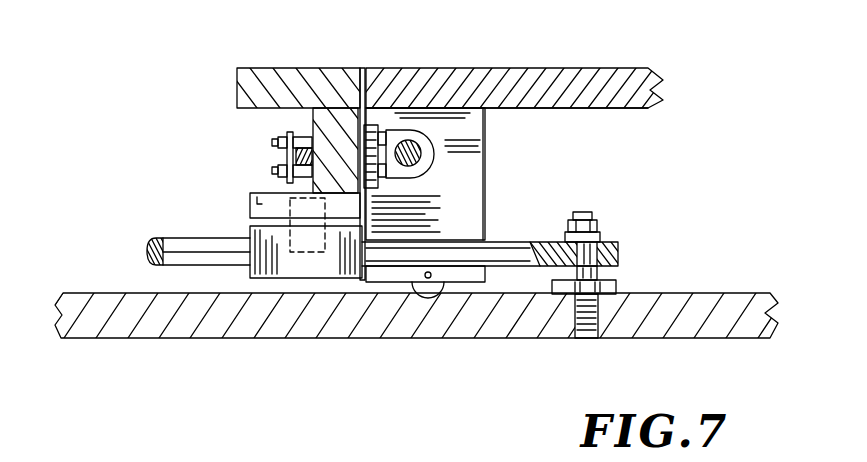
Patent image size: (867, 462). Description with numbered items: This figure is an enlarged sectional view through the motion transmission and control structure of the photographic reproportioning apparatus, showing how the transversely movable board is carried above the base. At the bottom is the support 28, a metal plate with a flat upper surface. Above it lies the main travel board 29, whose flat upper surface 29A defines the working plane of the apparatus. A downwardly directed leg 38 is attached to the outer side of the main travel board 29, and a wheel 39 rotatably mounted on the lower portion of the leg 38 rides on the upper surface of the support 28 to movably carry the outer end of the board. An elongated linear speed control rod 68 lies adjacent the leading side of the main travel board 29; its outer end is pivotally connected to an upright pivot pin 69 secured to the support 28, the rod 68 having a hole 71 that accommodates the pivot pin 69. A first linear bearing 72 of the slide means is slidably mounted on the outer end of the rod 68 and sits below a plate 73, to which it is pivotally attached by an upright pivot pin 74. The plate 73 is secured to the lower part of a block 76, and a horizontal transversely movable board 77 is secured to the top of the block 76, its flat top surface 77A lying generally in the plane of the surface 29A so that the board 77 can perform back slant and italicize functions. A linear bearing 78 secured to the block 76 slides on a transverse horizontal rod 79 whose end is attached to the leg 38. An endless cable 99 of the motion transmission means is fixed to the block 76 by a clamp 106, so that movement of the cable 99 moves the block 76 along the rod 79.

The support 28 is at (735, 297).
The main travel board 29 is at (625, 80).
The upper surface of main travel board 29A is at (549, 68).
The leg 38 is at (487, 176).
The wheel 39 is at (430, 282).
The speed control rod 68 is at (150, 243).
The pivot pin 69 is at (620, 255).
The hole 71 is at (599, 240).
The first linear bearing 72 is at (265, 277).
The plate 73 is at (258, 209).
The pivot pin 74 is at (308, 263).
The block 76 is at (371, 92).
The transversely movable board 77 is at (266, 82).
The top surface of transversely movable board 77A is at (327, 68).
The linear bearing 78 is at (424, 138).
The transverse rod 79 is at (418, 163).
The endless cable 99 is at (300, 136).
The clamp 106 is at (295, 154).